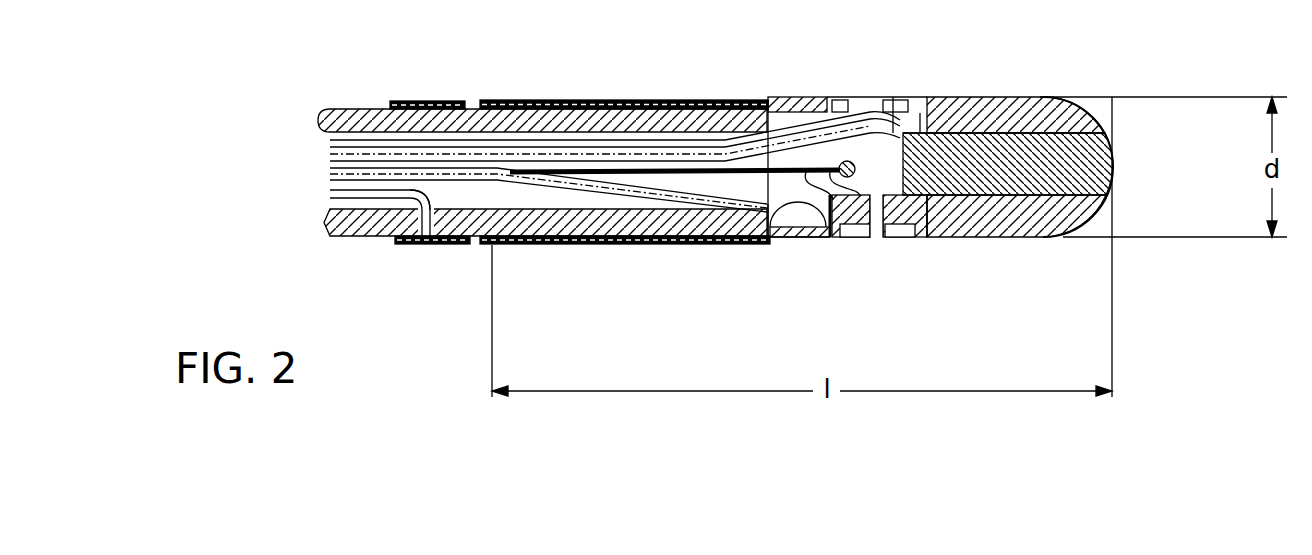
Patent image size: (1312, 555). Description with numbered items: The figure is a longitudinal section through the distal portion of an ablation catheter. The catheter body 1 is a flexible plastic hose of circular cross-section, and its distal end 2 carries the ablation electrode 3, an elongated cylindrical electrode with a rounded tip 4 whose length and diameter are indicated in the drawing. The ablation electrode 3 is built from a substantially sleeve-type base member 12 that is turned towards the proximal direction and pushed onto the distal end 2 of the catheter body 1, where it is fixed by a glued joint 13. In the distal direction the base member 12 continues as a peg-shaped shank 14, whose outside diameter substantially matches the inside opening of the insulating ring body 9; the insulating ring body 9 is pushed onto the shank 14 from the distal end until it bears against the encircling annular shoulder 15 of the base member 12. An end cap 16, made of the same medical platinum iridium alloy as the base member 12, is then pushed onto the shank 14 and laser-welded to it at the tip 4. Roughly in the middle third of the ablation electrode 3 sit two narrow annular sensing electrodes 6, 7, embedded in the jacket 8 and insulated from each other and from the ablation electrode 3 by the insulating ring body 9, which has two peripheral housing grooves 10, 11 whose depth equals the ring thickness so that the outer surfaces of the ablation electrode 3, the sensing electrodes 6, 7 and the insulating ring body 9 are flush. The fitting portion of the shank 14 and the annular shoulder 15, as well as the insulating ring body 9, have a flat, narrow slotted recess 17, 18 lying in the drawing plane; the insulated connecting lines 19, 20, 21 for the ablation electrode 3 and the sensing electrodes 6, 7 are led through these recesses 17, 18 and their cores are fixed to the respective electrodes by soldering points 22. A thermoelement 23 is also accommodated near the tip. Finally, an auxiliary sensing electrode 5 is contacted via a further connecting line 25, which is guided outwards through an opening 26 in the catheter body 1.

The catheter body 1 is at (325, 113).
The distal end 2 is at (700, 243).
The ablation electrode 3 is at (799, 252).
The tip 4 is at (1112, 159).
The auxiliary sensing electrode 5 is at (443, 240).
The sensing electrode 6 is at (907, 238).
The sensing electrode 7 is at (863, 238).
The jacket 8 is at (1003, 238).
The insulating ring body 9 is at (882, 238).
The housing groove 10 is at (945, 238).
The housing groove 11 is at (840, 238).
The base member 12 is at (787, 241).
The glued joint 13 is at (585, 100).
The shank 14 is at (1113, 178).
The annular shoulder 15 is at (823, 104).
The end cap 16 is at (1035, 108).
The slotted recess 17 is at (961, 110).
The slotted recess 18 is at (920, 118).
The connecting line 19 is at (505, 178).
The connecting line 20 is at (375, 148).
The connecting line 21 is at (430, 145).
The soldering point 22 is at (757, 241).
The thermoelement 23 is at (855, 172).
The connecting line 25 is at (378, 194).
The opening 26 is at (393, 240).